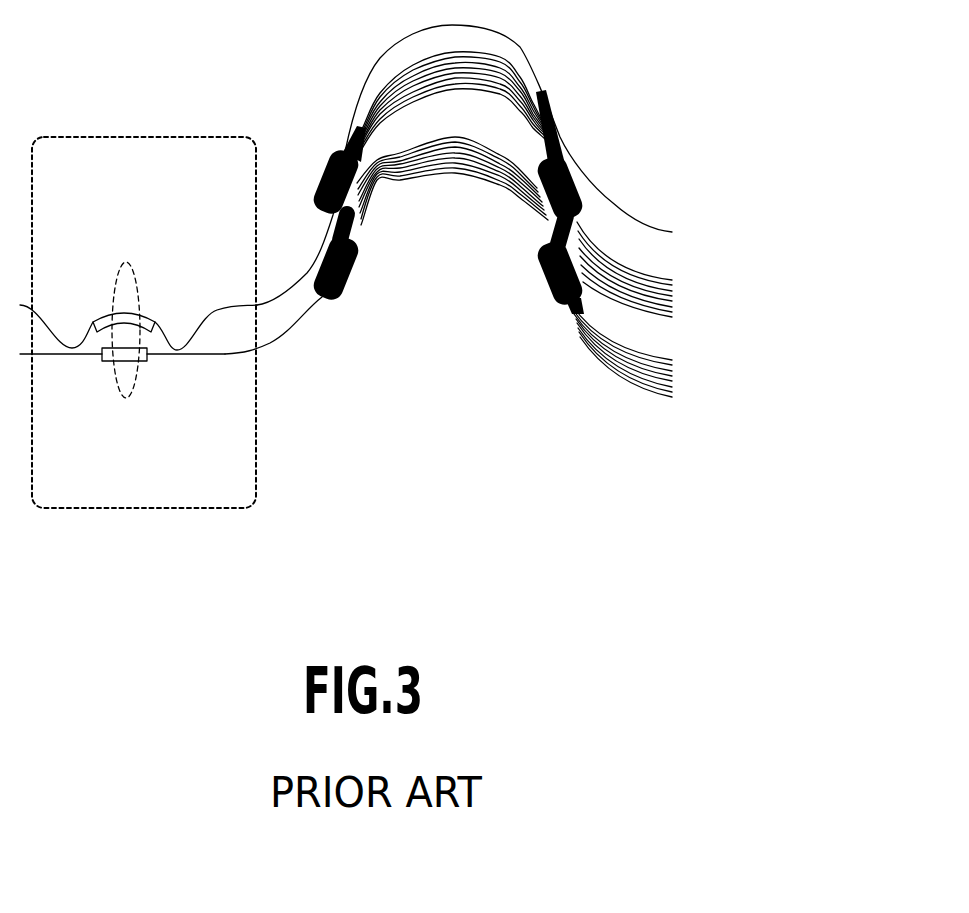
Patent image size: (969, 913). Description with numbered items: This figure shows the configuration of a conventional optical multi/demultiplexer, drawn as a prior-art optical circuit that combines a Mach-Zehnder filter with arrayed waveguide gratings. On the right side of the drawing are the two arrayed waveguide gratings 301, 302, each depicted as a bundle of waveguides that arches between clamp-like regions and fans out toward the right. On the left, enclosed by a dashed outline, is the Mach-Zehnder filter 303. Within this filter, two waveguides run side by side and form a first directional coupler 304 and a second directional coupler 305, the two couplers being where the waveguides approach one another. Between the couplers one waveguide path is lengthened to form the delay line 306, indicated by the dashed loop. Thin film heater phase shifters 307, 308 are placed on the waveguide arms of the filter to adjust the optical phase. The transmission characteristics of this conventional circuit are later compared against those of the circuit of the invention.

The arrayed waveguide grating 301 is at (493, 78).
The arrayed waveguide grating 302 is at (493, 158).
The Mach-Zehnder filter 303 is at (200, 137).
The directional coupler 304 is at (60, 356).
The directional coupler 305 is at (152, 362).
The delay line 306 is at (126, 262).
The thin film heater phase shifter 307 is at (104, 320).
The thin film heater phase shifter 308 is at (108, 362).